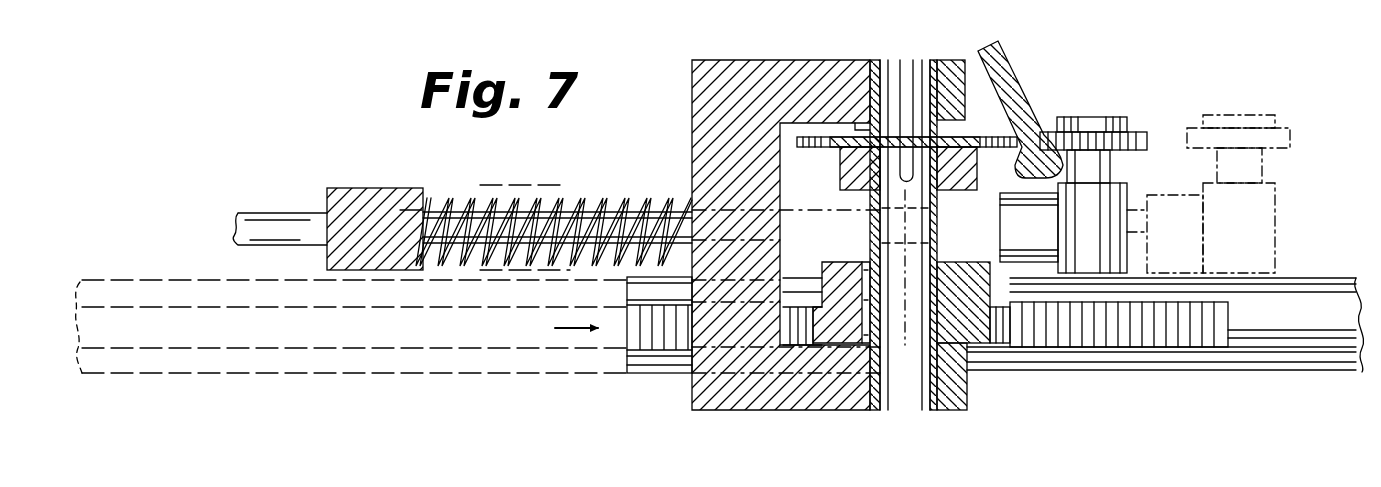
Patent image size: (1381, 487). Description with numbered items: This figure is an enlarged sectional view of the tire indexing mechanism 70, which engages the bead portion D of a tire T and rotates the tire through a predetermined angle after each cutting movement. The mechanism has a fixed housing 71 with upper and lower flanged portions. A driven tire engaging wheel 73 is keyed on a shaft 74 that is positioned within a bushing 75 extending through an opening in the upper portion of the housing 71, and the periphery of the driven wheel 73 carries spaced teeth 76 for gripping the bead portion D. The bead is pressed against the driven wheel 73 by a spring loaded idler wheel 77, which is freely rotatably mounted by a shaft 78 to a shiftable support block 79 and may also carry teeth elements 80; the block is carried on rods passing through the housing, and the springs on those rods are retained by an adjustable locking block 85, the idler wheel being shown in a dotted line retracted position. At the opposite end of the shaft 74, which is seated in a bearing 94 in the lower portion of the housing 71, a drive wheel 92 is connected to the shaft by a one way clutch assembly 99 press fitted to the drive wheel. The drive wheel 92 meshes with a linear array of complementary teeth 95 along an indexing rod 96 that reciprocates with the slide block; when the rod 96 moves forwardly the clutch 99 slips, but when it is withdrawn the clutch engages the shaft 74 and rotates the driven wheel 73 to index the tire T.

The indexing mechanism 70 is at (739, 226).
The fixed housing 71 is at (683, 98).
The driven tire engaging wheel 73 is at (840, 167).
The shaft 74 is at (882, 60).
The bushing 75 is at (945, 60).
The teeth 76 is at (826, 137).
The idler wheel 77 is at (1126, 90).
The shaft 78 is at (1114, 168).
The support block 79 is at (1072, 232).
The teeth elements 80 is at (1138, 131).
The adjustable locking block 85 is at (365, 190).
The drive wheel 92 is at (985, 343).
The bearing 94 is at (946, 411).
The teeth 95 is at (1194, 342).
The indexing rod 96 is at (1332, 283).
The clutch assembly 99 is at (852, 262).
The tire T is at (1013, 64).
The bead portion D is at (1048, 128).